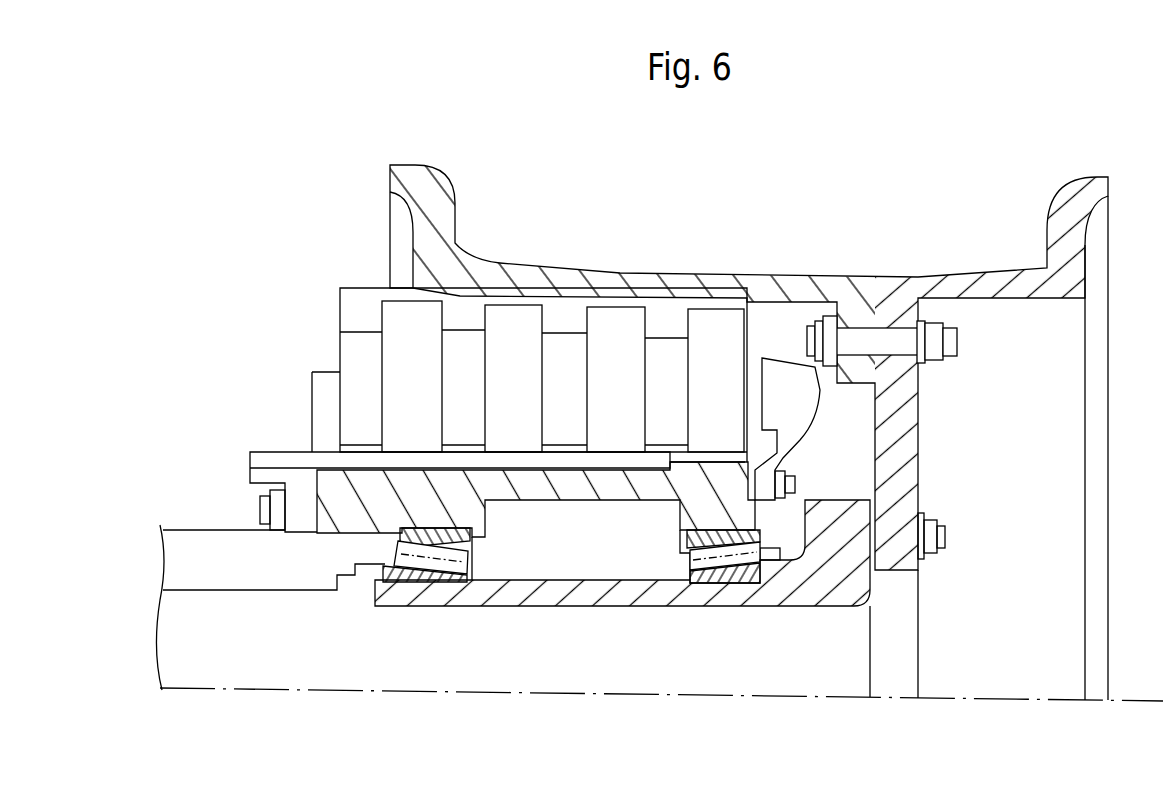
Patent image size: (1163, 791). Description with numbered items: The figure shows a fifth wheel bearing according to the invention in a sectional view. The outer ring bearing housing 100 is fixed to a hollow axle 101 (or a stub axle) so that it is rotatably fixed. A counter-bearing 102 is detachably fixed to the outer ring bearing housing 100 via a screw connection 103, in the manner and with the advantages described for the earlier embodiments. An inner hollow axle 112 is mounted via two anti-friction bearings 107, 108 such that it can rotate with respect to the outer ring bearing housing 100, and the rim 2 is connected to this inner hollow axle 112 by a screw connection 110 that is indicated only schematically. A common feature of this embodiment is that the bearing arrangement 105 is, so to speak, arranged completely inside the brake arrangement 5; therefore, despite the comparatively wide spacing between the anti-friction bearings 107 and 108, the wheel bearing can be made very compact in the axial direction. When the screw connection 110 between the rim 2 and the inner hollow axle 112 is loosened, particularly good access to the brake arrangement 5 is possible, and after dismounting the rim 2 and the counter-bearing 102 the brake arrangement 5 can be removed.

The rim 2 is at (877, 277).
The brake arrangement 5 is at (668, 377).
The outer ring bearing housing 100 is at (467, 509).
The hollow axle 101 is at (205, 548).
The counter-bearing 102 is at (780, 377).
The screw connection 103 is at (797, 483).
The bearing arrangement 105 is at (607, 658).
The anti-friction bearing 107 is at (404, 583).
The anti-friction bearing 108 is at (735, 584).
The screw connection 110 is at (946, 534).
The inner hollow axle 112 is at (820, 600).